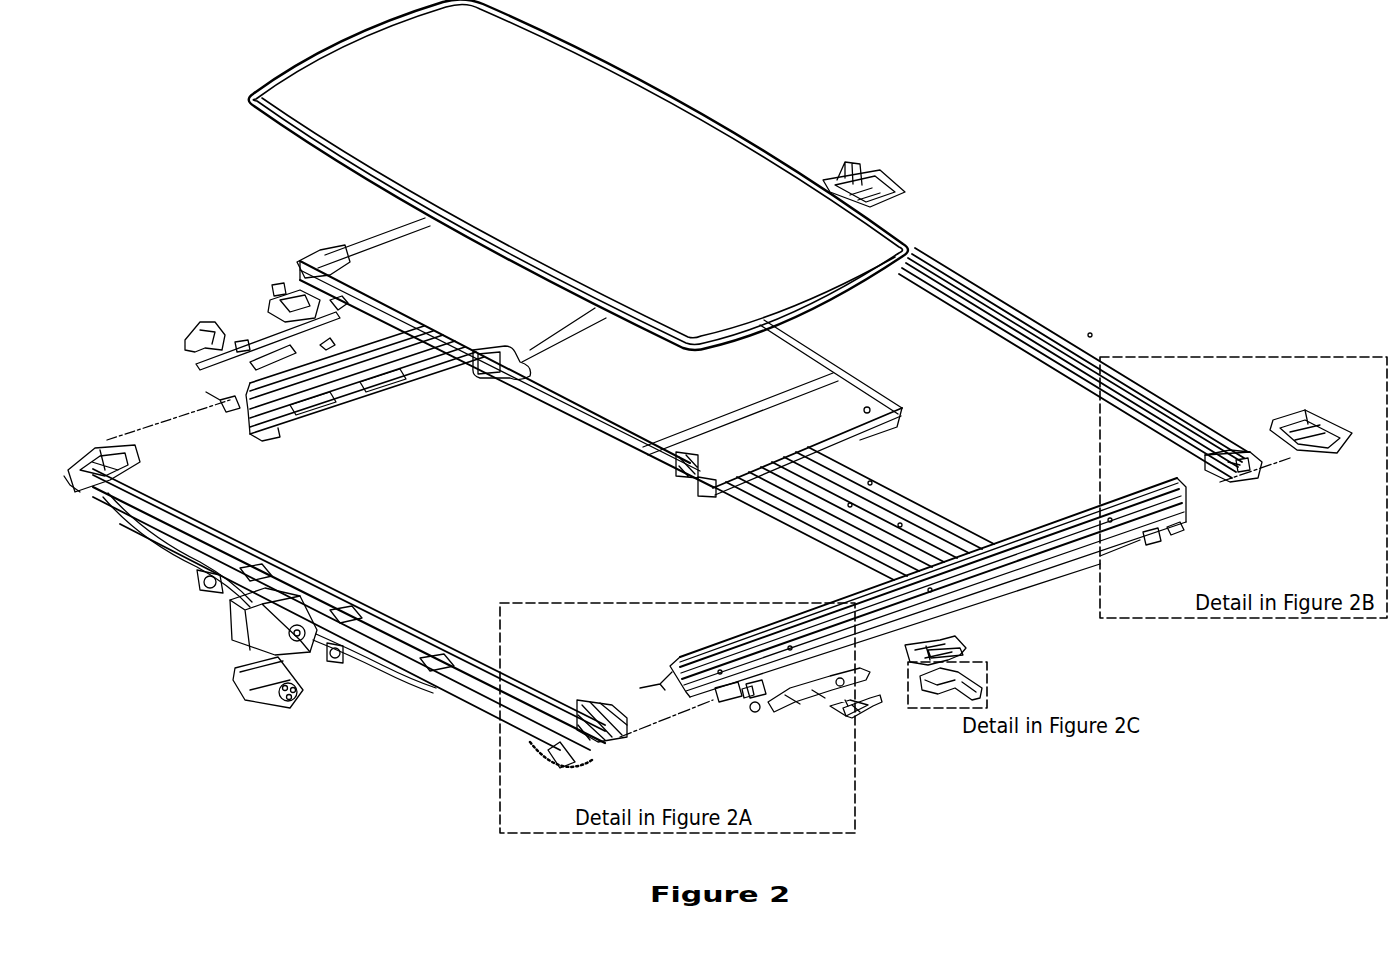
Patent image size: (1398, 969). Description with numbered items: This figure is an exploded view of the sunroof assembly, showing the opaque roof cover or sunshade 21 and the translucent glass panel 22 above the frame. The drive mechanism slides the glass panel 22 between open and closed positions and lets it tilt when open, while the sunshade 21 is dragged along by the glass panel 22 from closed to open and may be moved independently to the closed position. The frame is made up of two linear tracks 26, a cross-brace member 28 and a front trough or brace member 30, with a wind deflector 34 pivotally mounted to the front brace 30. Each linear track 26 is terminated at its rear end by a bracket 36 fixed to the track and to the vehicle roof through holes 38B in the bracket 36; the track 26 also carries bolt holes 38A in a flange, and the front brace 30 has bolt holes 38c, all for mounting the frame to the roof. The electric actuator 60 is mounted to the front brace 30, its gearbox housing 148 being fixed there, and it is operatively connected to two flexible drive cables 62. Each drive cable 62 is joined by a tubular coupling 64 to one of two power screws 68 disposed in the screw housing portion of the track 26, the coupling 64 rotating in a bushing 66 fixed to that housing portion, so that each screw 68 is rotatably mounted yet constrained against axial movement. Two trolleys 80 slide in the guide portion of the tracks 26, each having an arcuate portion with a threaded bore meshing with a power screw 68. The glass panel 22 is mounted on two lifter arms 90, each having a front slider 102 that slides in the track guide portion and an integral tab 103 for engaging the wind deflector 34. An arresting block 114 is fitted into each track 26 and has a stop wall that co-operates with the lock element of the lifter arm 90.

The glass panel 22 is at (687, 108).
The sunshade 21 is at (837, 390).
The bracket 36 is at (878, 170).
The cross-brace member 28 is at (905, 498).
The front brace member 30 is at (347, 600).
The linear track 26 is at (998, 578).
The bolt holes 38A is at (975, 592).
The holes 38B is at (1290, 458).
The bolt holes 38c is at (137, 510).
The power screw 68 is at (1135, 542).
The flexible drive cable 62 is at (177, 550).
The housing 148 is at (237, 623).
The electric actuator 60 is at (262, 700).
The wind deflector 34 is at (480, 697).
The tubular coupling 64 is at (720, 703).
The bushing 66 is at (748, 698).
The tab 103 is at (780, 707).
The front slider 102 is at (830, 717).
The arresting block 114 is at (863, 720).
The trolley 80 is at (928, 694).
The lifter arm 90 is at (912, 637).